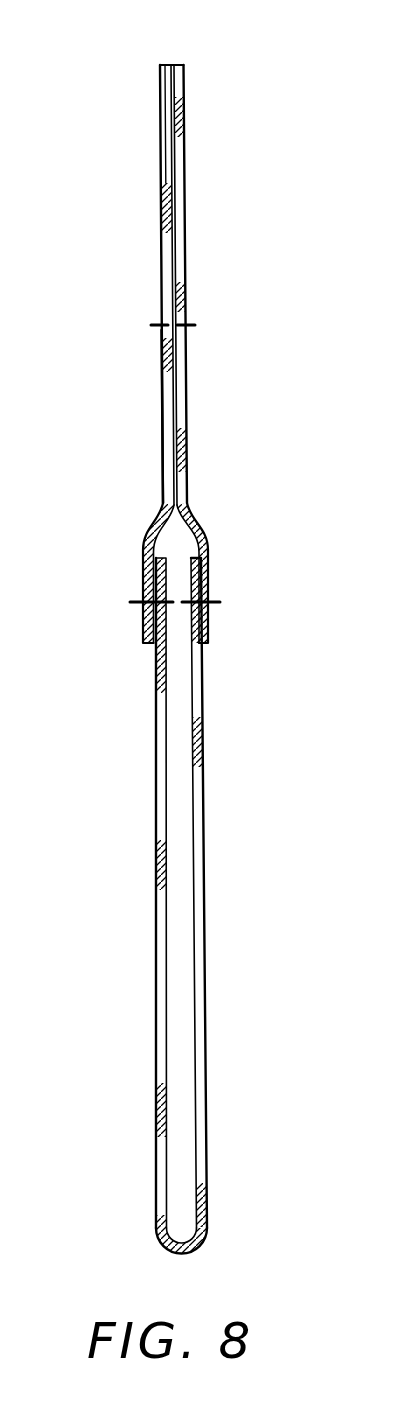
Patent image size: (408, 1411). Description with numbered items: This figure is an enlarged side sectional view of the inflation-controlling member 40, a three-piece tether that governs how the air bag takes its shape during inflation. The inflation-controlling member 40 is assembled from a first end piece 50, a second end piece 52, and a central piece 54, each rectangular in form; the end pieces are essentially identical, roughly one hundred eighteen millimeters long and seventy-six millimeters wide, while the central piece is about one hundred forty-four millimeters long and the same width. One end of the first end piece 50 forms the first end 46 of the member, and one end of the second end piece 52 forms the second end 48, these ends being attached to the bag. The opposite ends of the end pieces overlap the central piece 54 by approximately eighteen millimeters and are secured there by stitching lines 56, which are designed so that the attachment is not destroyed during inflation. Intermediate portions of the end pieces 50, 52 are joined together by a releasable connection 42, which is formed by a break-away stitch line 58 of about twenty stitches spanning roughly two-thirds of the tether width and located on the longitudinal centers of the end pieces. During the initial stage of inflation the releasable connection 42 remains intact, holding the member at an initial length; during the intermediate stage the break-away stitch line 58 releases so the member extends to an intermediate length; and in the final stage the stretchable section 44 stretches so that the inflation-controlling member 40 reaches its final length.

The inflation-controlling member 40 is at (127, 80).
The releasable connection 42 is at (198, 313).
The stretchable section 44 is at (203, 720).
The first end 46 is at (181, 153).
The second end 48 is at (165, 132).
The first end piece 50 is at (177, 243).
The second end piece 52 is at (161, 266).
The central piece 54 is at (203, 866).
The stitching lines 56 is at (220, 602).
The break-away stitch line 58 is at (193, 328).